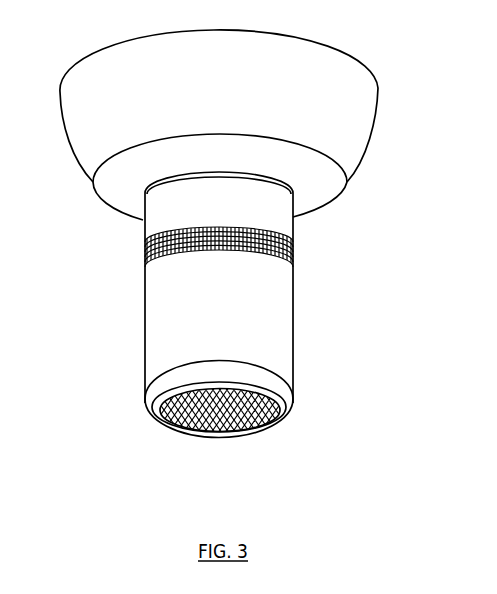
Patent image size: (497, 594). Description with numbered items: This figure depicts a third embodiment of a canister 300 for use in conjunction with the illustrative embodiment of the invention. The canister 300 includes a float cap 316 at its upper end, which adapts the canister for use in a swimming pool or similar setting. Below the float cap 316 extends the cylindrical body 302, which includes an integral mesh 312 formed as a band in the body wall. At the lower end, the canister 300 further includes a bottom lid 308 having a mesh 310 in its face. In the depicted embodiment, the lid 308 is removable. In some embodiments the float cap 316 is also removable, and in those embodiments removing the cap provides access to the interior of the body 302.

The canister 300 is at (73, 316).
The cylindrical body 302 is at (285, 317).
The bottom lid 308 is at (283, 385).
The mesh 310 is at (250, 428).
The integral mesh 312 is at (283, 252).
The float cap 316 is at (362, 88).